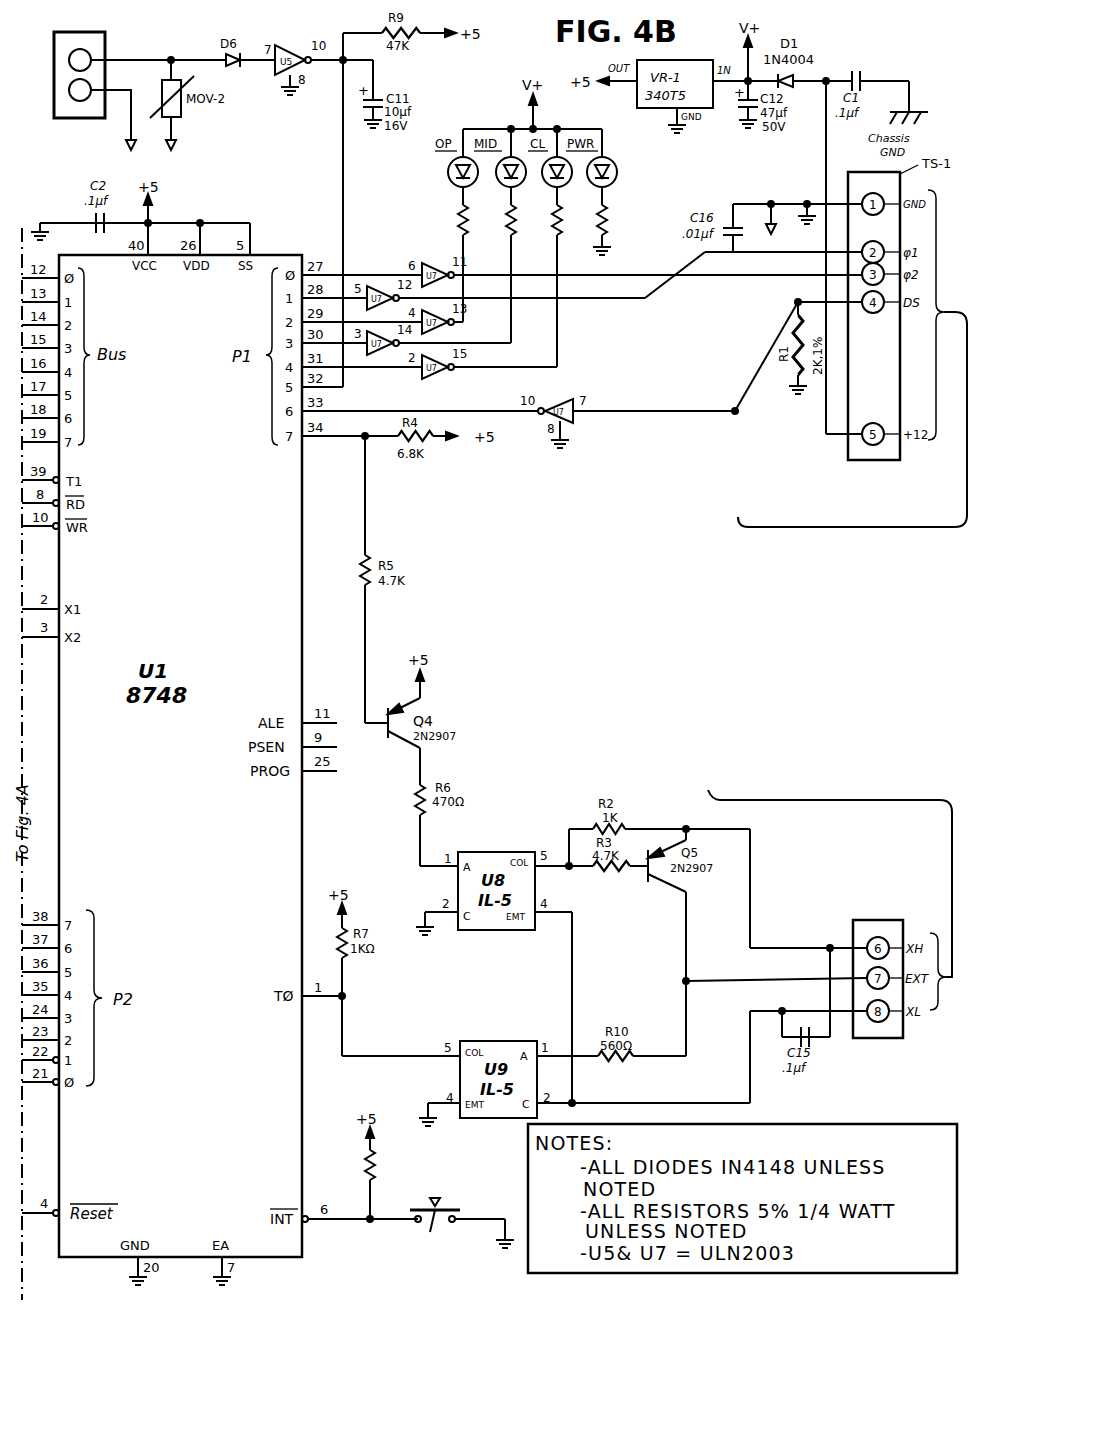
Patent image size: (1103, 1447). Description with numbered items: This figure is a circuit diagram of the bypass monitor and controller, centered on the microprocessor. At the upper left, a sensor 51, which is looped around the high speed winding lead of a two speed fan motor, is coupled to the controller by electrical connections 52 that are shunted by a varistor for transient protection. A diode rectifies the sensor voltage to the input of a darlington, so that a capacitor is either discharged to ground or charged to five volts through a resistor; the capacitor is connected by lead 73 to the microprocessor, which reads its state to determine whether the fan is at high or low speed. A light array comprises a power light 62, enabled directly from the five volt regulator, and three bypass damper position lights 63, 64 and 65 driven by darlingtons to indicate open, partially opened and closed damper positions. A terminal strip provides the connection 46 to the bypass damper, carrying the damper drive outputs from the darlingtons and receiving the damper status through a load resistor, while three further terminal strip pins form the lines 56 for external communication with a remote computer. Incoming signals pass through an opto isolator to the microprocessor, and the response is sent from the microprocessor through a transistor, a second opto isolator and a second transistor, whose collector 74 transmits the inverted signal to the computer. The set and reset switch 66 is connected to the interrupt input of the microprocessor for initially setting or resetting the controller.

The sensor 51 is at (78, 118).
The electrical connections 52 is at (118, 63).
The power light 62 is at (617, 172).
The bypass damper position light 63 is at (448, 171).
The bypass damper position light 64 is at (516, 152).
The bypass damper position light 65 is at (561, 152).
The set and reset button switch 66 is at (430, 1233).
The lead 73 is at (337, 152).
The collector 74 is at (686, 938).
The connection to bypass damper 46 is at (852, 358).
The lines for external communication 56 is at (828, 873).